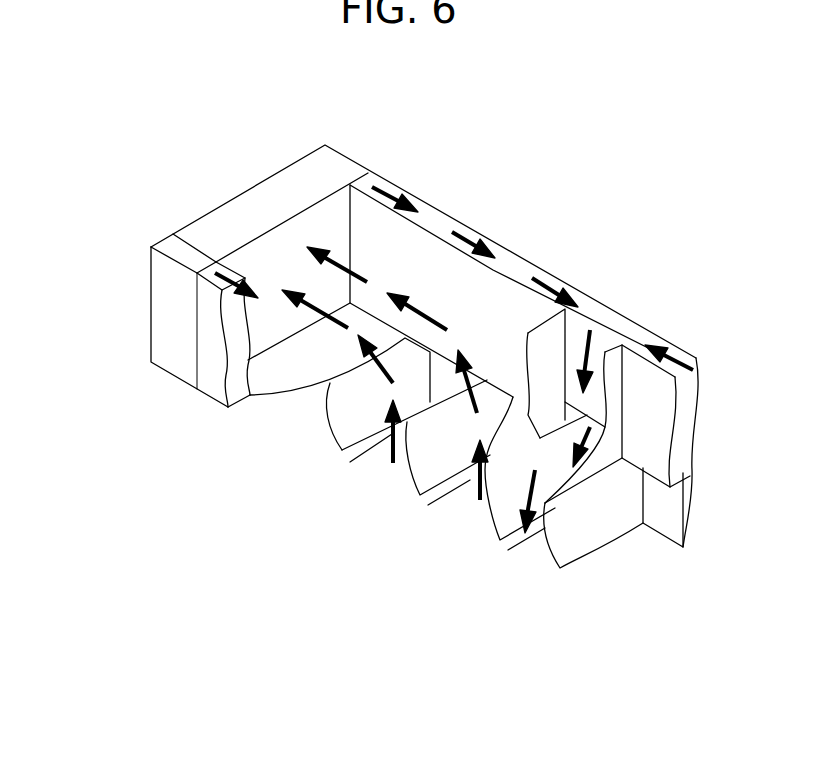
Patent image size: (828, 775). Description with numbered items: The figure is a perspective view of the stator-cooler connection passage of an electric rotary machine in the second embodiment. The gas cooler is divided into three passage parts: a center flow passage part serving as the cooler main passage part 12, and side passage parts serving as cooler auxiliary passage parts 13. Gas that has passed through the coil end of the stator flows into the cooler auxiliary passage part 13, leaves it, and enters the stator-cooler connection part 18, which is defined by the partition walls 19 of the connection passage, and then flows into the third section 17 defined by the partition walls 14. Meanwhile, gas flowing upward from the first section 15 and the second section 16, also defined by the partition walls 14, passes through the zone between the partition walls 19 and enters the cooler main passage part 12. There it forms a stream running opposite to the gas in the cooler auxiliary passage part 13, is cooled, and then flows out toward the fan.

The cooler main passage part 12 is at (262, 207).
The cooler auxiliary passage part 13 is at (347, 165).
The partition walls 14 is at (347, 417).
The first section 15 is at (350, 462).
The second section 16 is at (465, 475).
The third section 17 is at (540, 523).
The stator-cooler connection part 18 is at (510, 265).
The partition walls of the connection passage 19 is at (553, 368).